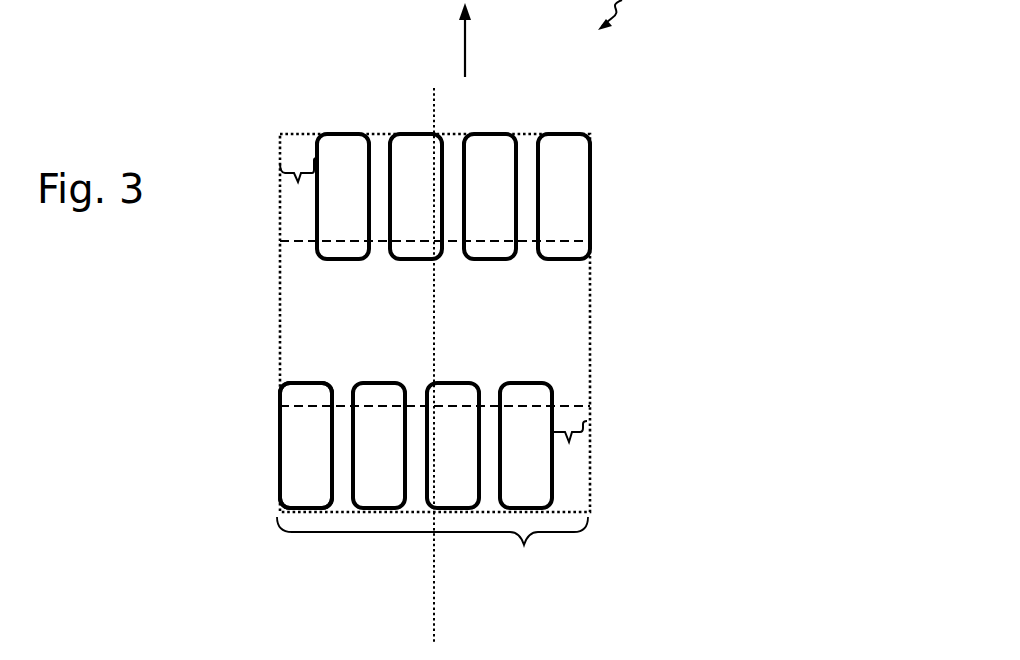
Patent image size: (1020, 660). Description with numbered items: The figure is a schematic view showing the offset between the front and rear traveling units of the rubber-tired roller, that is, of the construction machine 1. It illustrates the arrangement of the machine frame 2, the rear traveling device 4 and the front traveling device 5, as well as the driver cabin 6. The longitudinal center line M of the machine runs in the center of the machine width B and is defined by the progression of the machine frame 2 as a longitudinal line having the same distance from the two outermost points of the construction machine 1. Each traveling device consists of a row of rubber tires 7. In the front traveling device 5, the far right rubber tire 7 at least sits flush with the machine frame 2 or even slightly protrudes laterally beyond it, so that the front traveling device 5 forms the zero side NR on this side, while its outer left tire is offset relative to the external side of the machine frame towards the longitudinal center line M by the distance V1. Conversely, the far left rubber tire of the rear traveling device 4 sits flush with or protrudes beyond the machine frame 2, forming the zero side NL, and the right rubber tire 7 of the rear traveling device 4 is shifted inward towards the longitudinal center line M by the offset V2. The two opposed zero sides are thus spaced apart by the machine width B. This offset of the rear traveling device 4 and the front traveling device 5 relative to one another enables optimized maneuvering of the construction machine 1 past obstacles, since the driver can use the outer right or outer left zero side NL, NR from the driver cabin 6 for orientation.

The construction machine 1 is at (751, 659).
The machine frame 2 is at (586, 488).
The rear traveling device 4 is at (288, 490).
The front traveling device 5 is at (560, 158).
The driver cabin 6 is at (337, 405).
The rubber tire 7 is at (327, 147).
The machine width B is at (432, 545).
The longitudinal center line of the machine M is at (434, 374).
The zero side (left) NL is at (247, 442).
The zero side (right) NR is at (608, 194).
The distance (front left offset) V1 is at (303, 182).
The offset (rear right offset) V2 is at (572, 442).